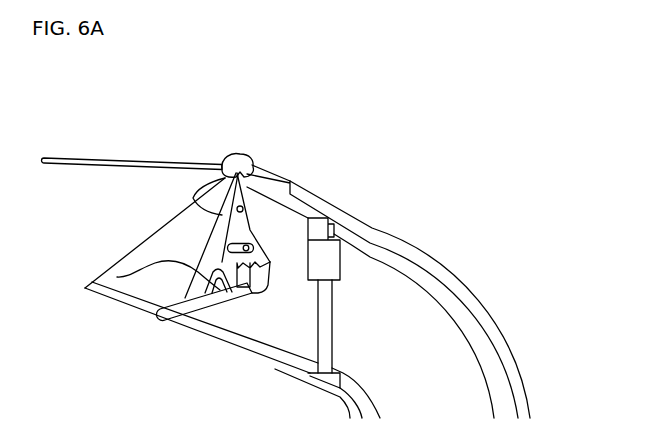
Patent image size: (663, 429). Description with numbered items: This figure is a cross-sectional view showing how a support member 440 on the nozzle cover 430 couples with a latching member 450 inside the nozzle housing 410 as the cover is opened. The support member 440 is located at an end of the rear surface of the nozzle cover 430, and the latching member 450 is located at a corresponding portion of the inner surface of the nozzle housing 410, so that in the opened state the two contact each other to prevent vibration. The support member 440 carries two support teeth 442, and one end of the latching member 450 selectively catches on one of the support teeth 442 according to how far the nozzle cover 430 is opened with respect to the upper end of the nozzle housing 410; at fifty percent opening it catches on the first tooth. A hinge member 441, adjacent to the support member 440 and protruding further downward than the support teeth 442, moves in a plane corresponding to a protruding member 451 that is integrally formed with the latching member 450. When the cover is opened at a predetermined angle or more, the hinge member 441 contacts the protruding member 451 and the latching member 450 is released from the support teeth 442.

The nozzle housing 410 is at (382, 235).
The nozzle cover 430 is at (114, 156).
The support member 440 is at (258, 227).
The hinge member 441 is at (264, 282).
The support teeth 442 is at (217, 218).
The latching member 450 is at (185, 320).
The protruding member 451 is at (117, 277).